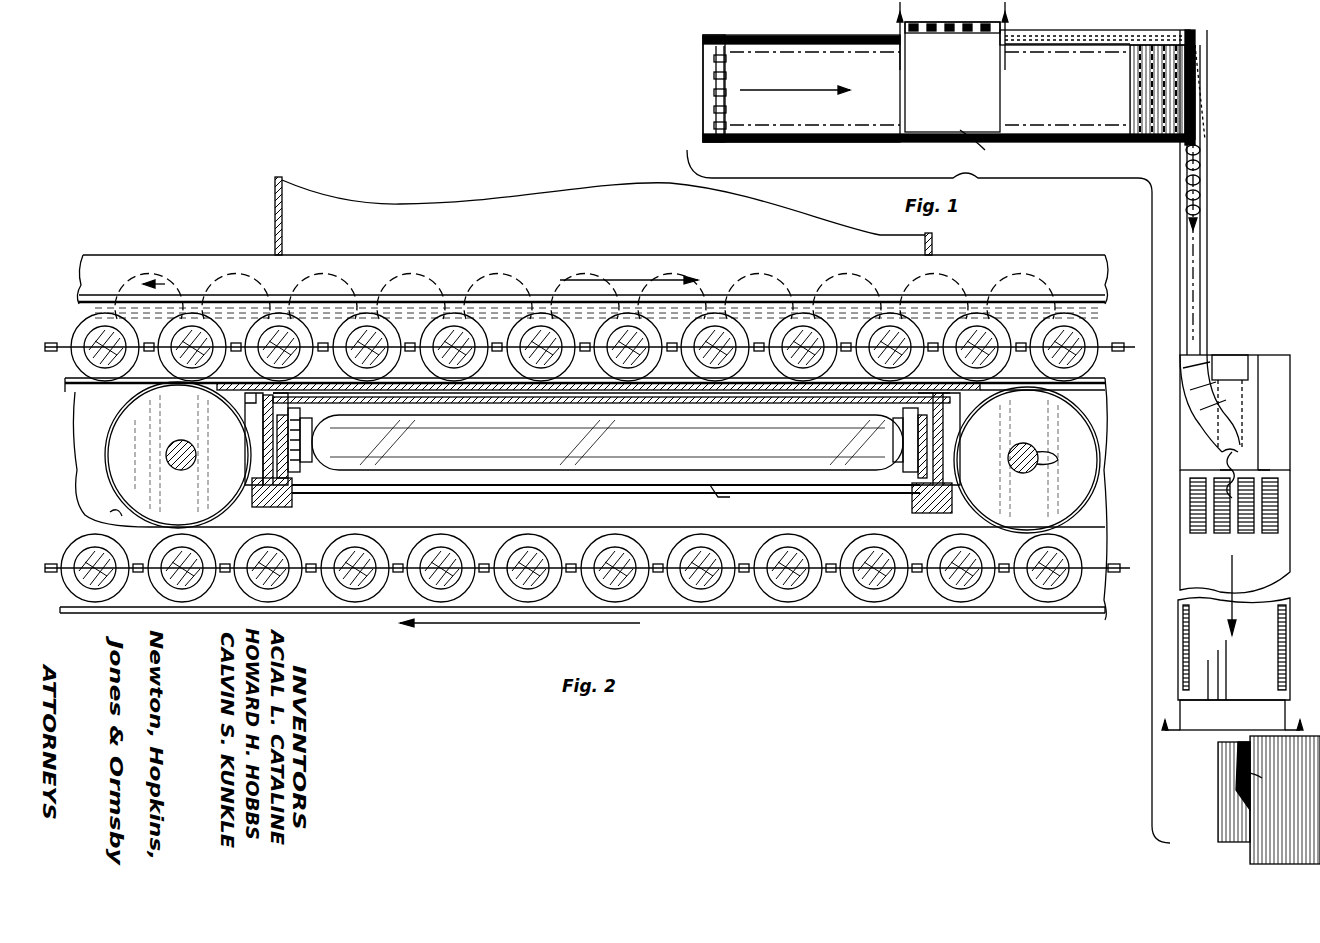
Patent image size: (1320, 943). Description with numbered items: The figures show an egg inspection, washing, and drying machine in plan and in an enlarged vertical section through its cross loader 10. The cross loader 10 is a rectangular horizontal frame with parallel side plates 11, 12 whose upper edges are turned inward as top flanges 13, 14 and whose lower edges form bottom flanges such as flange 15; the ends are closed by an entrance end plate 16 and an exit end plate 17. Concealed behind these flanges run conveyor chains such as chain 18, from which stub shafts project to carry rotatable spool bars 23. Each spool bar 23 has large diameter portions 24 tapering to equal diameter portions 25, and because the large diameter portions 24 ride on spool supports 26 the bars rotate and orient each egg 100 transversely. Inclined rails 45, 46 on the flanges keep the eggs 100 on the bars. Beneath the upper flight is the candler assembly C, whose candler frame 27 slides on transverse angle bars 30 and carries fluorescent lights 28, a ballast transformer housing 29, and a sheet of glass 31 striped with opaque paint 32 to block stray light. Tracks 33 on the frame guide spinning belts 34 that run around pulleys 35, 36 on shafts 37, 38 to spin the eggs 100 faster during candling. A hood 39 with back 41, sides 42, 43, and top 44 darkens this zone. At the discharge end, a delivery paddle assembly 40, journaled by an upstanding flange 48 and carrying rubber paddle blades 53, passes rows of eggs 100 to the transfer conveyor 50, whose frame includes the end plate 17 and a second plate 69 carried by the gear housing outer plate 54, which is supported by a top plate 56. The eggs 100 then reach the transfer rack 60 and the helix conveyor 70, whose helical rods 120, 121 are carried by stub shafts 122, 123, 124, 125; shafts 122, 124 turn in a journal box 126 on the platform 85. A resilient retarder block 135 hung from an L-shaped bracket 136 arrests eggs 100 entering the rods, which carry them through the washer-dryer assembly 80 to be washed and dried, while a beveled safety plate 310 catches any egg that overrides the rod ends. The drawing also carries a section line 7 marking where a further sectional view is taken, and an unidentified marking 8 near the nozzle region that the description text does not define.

In FIG. 1, the section line 7- 7 is at (1233, 664).
In FIG. 1, the nozzle element 8 is at (1262, 362).
In FIG. 1, the cross loader 10 is at (860, 36).
In FIG. 2, the cross loader 10 is at (218, 256).
In FIG. 1, the side plate 11 is at (778, 32).
In FIG. 2, the side plate 11 is at (440, 292).
In FIG. 1, the side plate 12 is at (815, 140).
In FIG. 1, the top flange 13 is at (895, 36).
In FIG. 2, the top flange 13 is at (766, 296).
In FIG. 1, the top flange 14 is at (870, 140).
In FIG. 2, the bottom flange 15 is at (748, 624).
In FIG. 1, the entrance end plate 16 is at (703, 86).
In FIG. 1, the exit end plate 17 is at (1182, 258).
In FIG. 2, the conveyor chain 18 is at (1085, 340).
In FIG. 1, the spool bar 23 is at (724, 76).
In FIG. 2, the spool bar 23 is at (579, 457).
In FIG. 2, the large diameter portion 24 is at (450, 556).
In FIG. 2, the equal diameter portion 25 is at (516, 530).
In FIG. 2, the spool support 26 is at (125, 398).
In FIG. 2, the candler frame 27 is at (260, 456).
In FIG. 2, the fluorescent light 28 is at (516, 446).
In FIG. 1, the ballast transformer housing 29 is at (932, 22).
In FIG. 2, the angle bar 30 is at (292, 500).
In FIG. 2, the sheet of glass 31 is at (338, 384).
In FIG. 2, the opaque paint 32 is at (422, 390).
In FIG. 2, the track 33 is at (684, 386).
In FIG. 2, the spinning belt 34 is at (112, 510).
In FIG. 2, the pulley 35 is at (172, 422).
In FIG. 2, the pulley 36 is at (1047, 422).
In FIG. 2, the shaft 37 is at (192, 450).
In FIG. 2, the shaft 38 is at (1028, 468).
In FIG. 1, the hood 39 is at (965, 138).
In FIG. 2, the hood 39 is at (425, 206).
In FIG. 1, the delivery paddle assembly 40 is at (1249, 92).
In FIG. 2, the back 41 is at (580, 202).
In FIG. 2, the side 42 is at (275, 210).
In FIG. 2, the side 43 is at (932, 233).
In FIG. 1, the top 44 is at (940, 118).
In FIG. 1, the rail 45 is at (822, 36).
In FIG. 2, the rail 45 is at (172, 279).
In FIG. 1, the rail 46 is at (775, 140).
In FIG. 1, the upstanding flange 48 is at (1180, 148).
In FIG. 1, the transfer conveyor 50 is at (1210, 178).
In FIG. 1, the rubber paddle blade 53 is at (1200, 80).
In FIG. 1, the outer plate 54 is at (1092, 30).
In FIG. 1, the top plate 56 is at (1033, 30).
In FIG. 1, the transfer rack 60 is at (1202, 412).
In FIG. 1, the second plate 69 is at (1207, 222).
In FIG. 1, the helix conveyor 70 is at (1270, 444).
In FIG. 1, the washer-dryer assembly 80 is at (1275, 545).
In FIG. 1, the platform 85 is at (1270, 370).
In FIG. 1, the egg 100 is at (1225, 55).
In FIG. 2, the egg 100 is at (146, 282).
In FIG. 1, the helical rod 120 is at (1228, 456).
In FIG. 1, the helical rod 121 is at (1238, 470).
In FIG. 1, the stub shaft 122 is at (1214, 356).
In FIG. 1, the stub shaft 123 is at (1236, 768).
In FIG. 1, the stub shaft 124 is at (1235, 355).
In FIG. 1, the stub shaft 125 is at (1244, 784).
In FIG. 1, the journal box 126 is at (1208, 356).
In FIG. 1, the retarder block 135 is at (1238, 450).
In FIG. 1, the L-shaped bracket 136 is at (1230, 425).
In FIG. 1, the safety plate 310 is at (1222, 820).
In FIG. 2, the candler assembly C is at (730, 498).